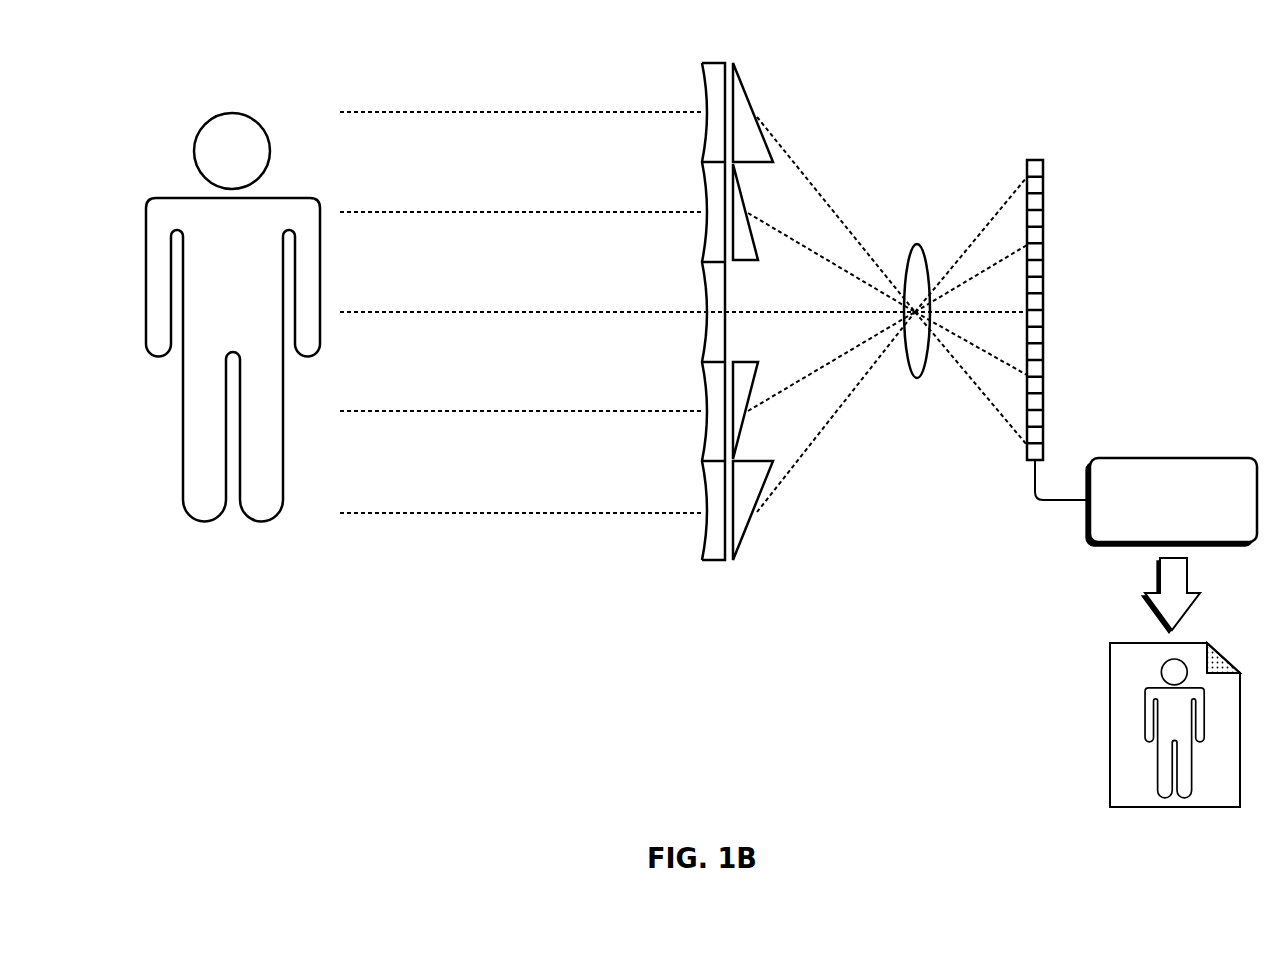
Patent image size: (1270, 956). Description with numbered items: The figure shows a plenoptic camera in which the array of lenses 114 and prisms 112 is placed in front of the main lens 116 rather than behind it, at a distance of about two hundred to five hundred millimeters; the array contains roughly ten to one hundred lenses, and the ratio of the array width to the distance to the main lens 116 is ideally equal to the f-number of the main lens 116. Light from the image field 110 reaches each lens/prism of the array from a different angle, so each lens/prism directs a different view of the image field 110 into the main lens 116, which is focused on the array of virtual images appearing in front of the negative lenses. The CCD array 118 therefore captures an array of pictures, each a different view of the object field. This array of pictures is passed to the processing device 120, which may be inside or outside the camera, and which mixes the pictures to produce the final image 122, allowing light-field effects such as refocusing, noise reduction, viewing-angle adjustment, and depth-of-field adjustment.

The image field 110 is at (233, 284).
The prisms 112 is at (748, 63).
The array of lenses 114 is at (716, 62).
The main lens 116 is at (917, 243).
The CCD array 118 is at (1035, 160).
The processing device 120 is at (1146, 545).
The final image 122 is at (1110, 805).